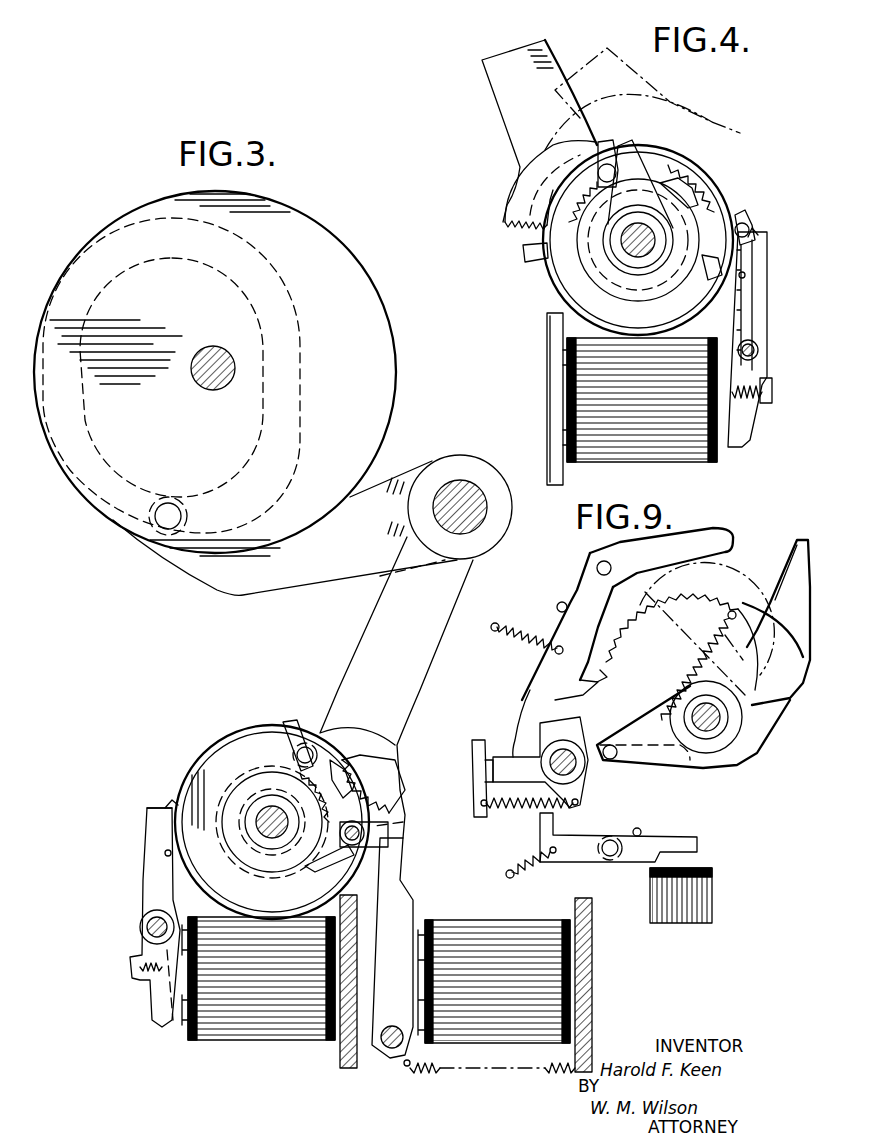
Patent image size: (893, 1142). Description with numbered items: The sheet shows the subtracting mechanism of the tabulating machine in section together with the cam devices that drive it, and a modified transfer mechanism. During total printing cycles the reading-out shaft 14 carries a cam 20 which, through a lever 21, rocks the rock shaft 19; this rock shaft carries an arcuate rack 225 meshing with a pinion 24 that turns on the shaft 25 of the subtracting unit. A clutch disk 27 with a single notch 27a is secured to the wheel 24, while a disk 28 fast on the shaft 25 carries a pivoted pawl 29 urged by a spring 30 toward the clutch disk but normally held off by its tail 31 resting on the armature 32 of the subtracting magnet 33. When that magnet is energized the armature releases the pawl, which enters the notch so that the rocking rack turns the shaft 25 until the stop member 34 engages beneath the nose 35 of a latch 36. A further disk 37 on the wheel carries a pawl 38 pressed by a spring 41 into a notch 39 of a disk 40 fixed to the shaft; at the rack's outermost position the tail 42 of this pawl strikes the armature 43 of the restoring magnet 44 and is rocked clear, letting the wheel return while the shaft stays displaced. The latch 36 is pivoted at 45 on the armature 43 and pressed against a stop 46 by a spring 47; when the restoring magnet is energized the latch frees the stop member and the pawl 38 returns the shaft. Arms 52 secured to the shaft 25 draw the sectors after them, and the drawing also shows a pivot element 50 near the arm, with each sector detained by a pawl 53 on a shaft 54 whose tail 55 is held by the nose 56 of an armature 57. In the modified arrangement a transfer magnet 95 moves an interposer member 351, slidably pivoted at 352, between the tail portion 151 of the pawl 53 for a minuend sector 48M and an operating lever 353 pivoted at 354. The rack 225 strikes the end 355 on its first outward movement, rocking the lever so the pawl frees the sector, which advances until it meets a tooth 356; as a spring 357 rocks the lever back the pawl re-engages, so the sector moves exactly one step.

In FIG. 3, the reading-out shaft 14 is at (216, 362).
In FIG. 3, the rock shaft 19 is at (480, 509).
In FIG. 3, the cam 20 is at (313, 224).
In FIG. 3, the lever 21 is at (310, 575).
In FIG. 3, the pinion 24 is at (404, 822).
In FIG. 3, the shaft 25 is at (260, 828).
In FIG. 4, the shaft 25 is at (638, 243).
In FIG. 9, the shaft 25 is at (707, 727).
In FIG. 3, the clutch disk 27 is at (260, 861).
In FIG. 3, the notch 27a is at (297, 866).
In FIG. 3, the disk 28 is at (252, 726).
In FIG. 3, the pawl 29 is at (323, 861).
In FIG. 3, the spring 30 is at (345, 783).
In FIG. 3, the tail 31 is at (365, 836).
In FIG. 4, the tail 31 is at (530, 257).
In FIG. 3, the armature 32 is at (392, 905).
In FIG. 3, the subtracting magnet 33 is at (495, 930).
In FIG. 3, the stop member 34 is at (287, 720).
In FIG. 4, the stop member 34 is at (624, 142).
In FIG. 3, the nose 35 is at (165, 808).
In FIG. 4, the nose 35 is at (748, 237).
In FIG. 3, the latch 36 is at (147, 833).
In FIG. 4, the latch 36 is at (753, 306).
In FIG. 4, the disk 37 is at (707, 174).
In FIG. 3, the pawl 38 is at (248, 745).
In FIG. 4, the pawl 38 is at (683, 158).
In FIG. 3, the notch 39 is at (232, 776).
In FIG. 4, the notch 39 is at (690, 270).
In FIG. 4, the disk 40 is at (592, 253).
In FIG. 4, the spring 41 is at (588, 190).
In FIG. 4, the tail 42 is at (604, 140).
In FIG. 3, the armature 43 is at (148, 885).
In FIG. 4, the armature 43 is at (768, 288).
In FIG. 3, the restoring magnet 44 is at (222, 1017).
In FIG. 4, the restoring magnet 44 is at (687, 450).
In FIG. 4, the pivot 45 is at (760, 350).
In FIG. 3, the stop 46 is at (165, 855).
In FIG. 4, the stop 46 is at (745, 275).
In FIG. 3, the spring 47 is at (150, 976).
In FIG. 4, the spring 47 is at (748, 401).
In FIG. 9, the minuend sector 48M is at (747, 737).
In FIG. 9, the pin 50 is at (615, 758).
In FIG. 9, the arm 52 is at (662, 758).
In FIG. 9, the detent pawl 53 is at (582, 723).
In FIG. 9, the shaft 54 is at (573, 770).
In FIG. 9, the tail 55 is at (511, 718).
In FIG. 9, the nose 56 is at (477, 742).
In FIG. 9, the armature 57 is at (484, 820).
In FIG. 9, the transfer magnet 95 is at (705, 893).
In FIG. 9, the tail portion 151 is at (584, 796).
In FIG. 3, the arcuate rack 225 is at (375, 806).
In FIG. 4, the arcuate rack 225 is at (513, 218).
In FIG. 9, the arcuate rack 225 is at (650, 605).
In FIG. 9, the interposer member 351 is at (601, 854).
In FIG. 9, the pivot 352 is at (610, 860).
In FIG. 9, the operating lever 353 is at (553, 670).
In FIG. 9, the pivot 354 is at (596, 568).
In FIG. 9, the end 355 is at (705, 530).
In FIG. 9, the tooth 356 is at (597, 682).
In FIG. 9, the spring 357 is at (537, 608).